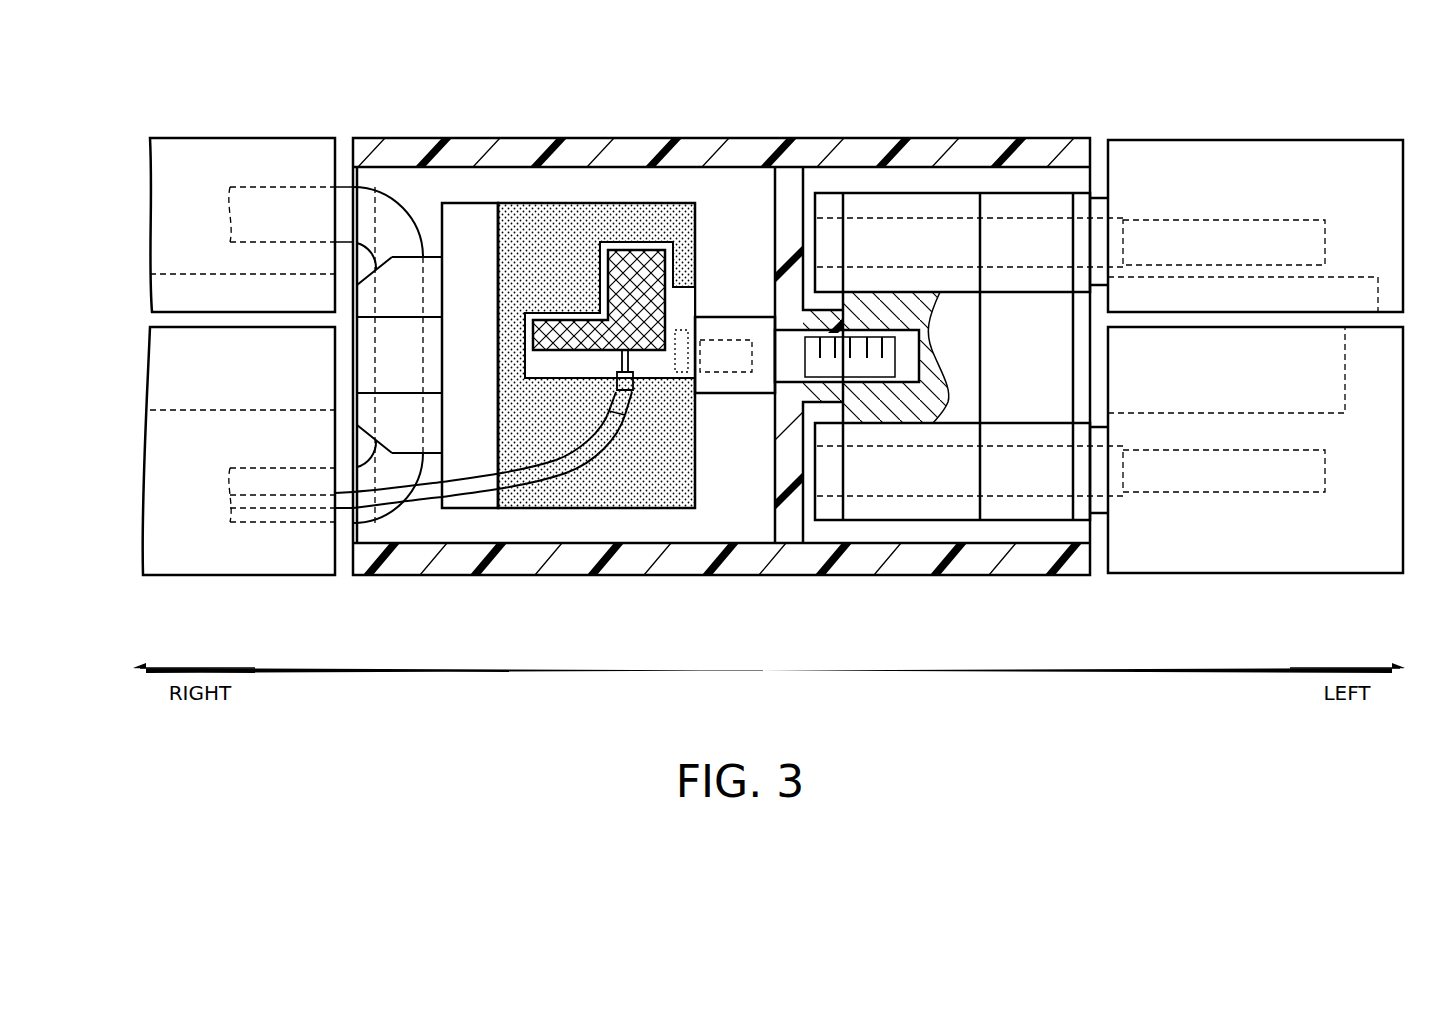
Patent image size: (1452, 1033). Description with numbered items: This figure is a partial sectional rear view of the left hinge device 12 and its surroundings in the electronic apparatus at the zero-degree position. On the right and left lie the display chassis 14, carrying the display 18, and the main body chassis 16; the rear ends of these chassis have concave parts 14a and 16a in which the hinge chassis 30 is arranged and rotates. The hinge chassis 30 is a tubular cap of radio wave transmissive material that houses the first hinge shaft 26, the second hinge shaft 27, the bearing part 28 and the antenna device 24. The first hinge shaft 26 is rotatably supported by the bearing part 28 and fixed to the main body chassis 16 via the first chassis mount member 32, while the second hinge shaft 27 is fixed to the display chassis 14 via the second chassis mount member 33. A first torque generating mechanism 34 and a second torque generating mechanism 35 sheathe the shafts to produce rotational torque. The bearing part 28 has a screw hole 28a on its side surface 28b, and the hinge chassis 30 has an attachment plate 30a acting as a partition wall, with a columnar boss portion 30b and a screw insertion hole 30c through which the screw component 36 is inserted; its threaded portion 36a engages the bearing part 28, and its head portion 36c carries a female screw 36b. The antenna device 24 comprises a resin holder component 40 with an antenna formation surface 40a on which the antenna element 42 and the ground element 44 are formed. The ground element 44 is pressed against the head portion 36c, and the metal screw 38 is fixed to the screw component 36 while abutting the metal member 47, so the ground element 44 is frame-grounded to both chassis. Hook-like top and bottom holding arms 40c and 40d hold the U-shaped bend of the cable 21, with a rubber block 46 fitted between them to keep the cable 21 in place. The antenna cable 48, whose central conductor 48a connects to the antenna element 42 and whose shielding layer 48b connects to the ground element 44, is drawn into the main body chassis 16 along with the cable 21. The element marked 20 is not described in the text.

The hinge device 12 is at (585, 105).
The display chassis 14 is at (242, 158).
The concave part 14a is at (343, 152).
The main body chassis 16 is at (242, 553).
The concave part 16a is at (343, 558).
The display 18 is at (190, 292).
The lower engaging portion 20 is at (190, 370).
The cable 21 is at (387, 218).
The antenna device 24 is at (543, 530).
The first hinge shaft 26 is at (920, 497).
The second hinge shaft 27 is at (1028, 217).
The bearing part 28 is at (1025, 505).
The screw hole 28a is at (925, 352).
The side surface 28b is at (843, 404).
The hinge chassis 30 is at (442, 582).
The attachment plate 30a is at (788, 220).
The boss portion 30b is at (818, 316).
The screw insertion hole 30c is at (773, 347).
The first chassis mount member 32 is at (1223, 494).
The second chassis mount member 33 is at (1225, 218).
The first torque generating mechanism 34 is at (893, 505).
The second torque generating mechanism 35 is at (873, 207).
The screw component 36 is at (740, 305).
The threaded portion 36a is at (868, 372).
The female screw 36b is at (716, 358).
The head portion 36c is at (742, 392).
The metal screw 38 is at (672, 375).
The holder component 40 is at (468, 227).
The antenna formation surface 40a is at (520, 506).
The upper holding arm 40c is at (365, 297).
The bottom holding arm 40d is at (367, 415).
The antenna element 42 is at (642, 263).
The ground element 44 is at (537, 223).
The rubber block 46 is at (367, 355).
The metal member 47 is at (680, 300).
The antenna cable 48 is at (427, 497).
The central conductor 48a is at (637, 400).
The shielding layer 48b is at (640, 365).